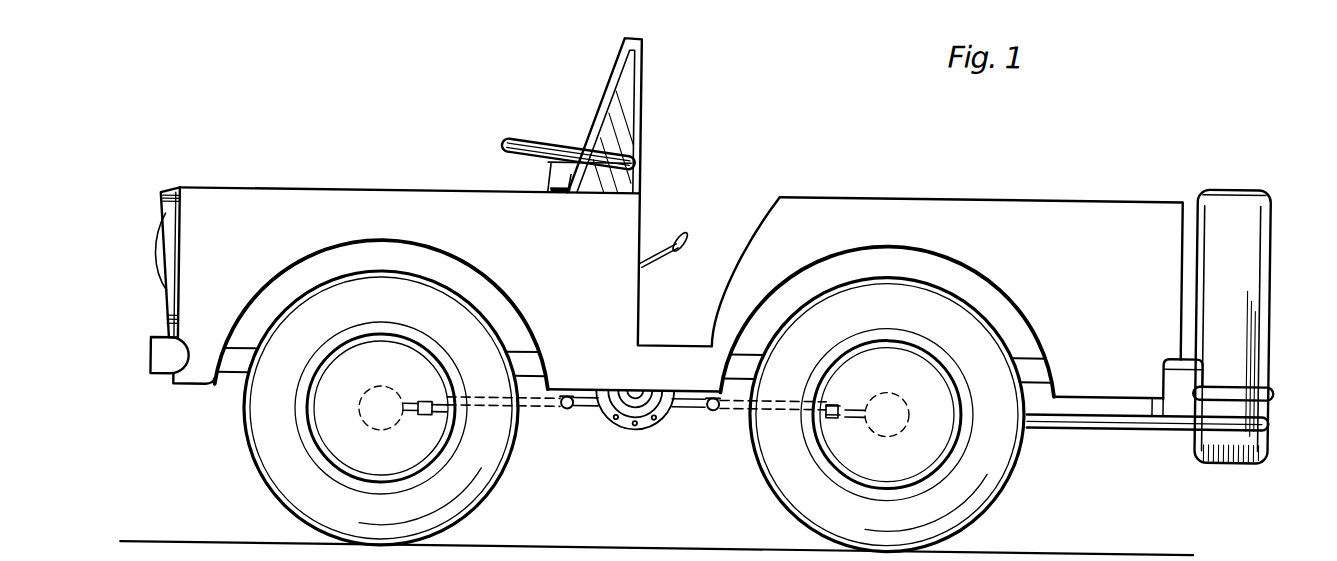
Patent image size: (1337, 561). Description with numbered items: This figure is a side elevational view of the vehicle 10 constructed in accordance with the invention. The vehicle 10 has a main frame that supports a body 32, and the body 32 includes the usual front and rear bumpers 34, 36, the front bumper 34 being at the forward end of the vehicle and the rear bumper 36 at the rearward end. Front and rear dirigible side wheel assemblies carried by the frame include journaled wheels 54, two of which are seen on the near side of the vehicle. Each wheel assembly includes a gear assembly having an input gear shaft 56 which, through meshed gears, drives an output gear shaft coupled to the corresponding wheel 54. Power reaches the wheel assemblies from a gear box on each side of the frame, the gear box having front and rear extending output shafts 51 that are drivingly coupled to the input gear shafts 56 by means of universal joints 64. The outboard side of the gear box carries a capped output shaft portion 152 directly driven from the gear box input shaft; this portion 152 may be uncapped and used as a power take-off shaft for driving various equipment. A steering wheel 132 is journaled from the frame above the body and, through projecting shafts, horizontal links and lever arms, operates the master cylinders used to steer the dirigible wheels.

The vehicle 10 is at (335, 188).
The steering wheel 132 is at (543, 145).
The body 32 is at (957, 204).
The front bumper 34 is at (160, 355).
The rear bumper 36 is at (1268, 382).
The wheel 54 is at (477, 472).
The input gear shaft 56 is at (440, 406).
The output shaft 51 is at (604, 397).
The universal joint 64 is at (565, 407).
The capped output shaft portion 152 is at (632, 416).